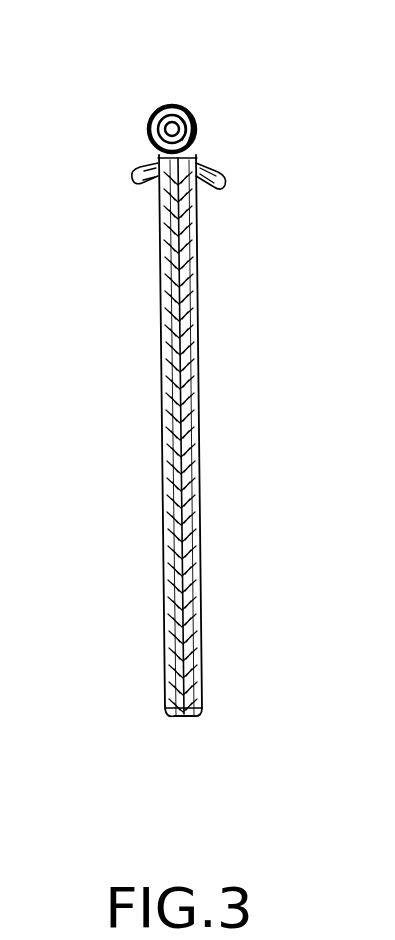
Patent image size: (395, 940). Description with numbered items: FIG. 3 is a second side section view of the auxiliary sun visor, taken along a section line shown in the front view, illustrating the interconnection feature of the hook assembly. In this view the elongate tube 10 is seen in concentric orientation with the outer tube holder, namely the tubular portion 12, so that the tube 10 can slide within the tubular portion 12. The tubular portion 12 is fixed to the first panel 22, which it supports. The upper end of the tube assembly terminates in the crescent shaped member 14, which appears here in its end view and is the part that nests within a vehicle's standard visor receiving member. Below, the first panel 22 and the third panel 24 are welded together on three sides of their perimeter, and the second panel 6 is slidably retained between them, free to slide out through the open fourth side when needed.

The elongate tube 10 is at (165, 363).
The tubular portion 12 is at (187, 101).
The crescent shaped member 14 is at (214, 171).
The first panel 22 is at (165, 435).
The third panel 24 is at (163, 478).
The second panel 6 is at (167, 542).